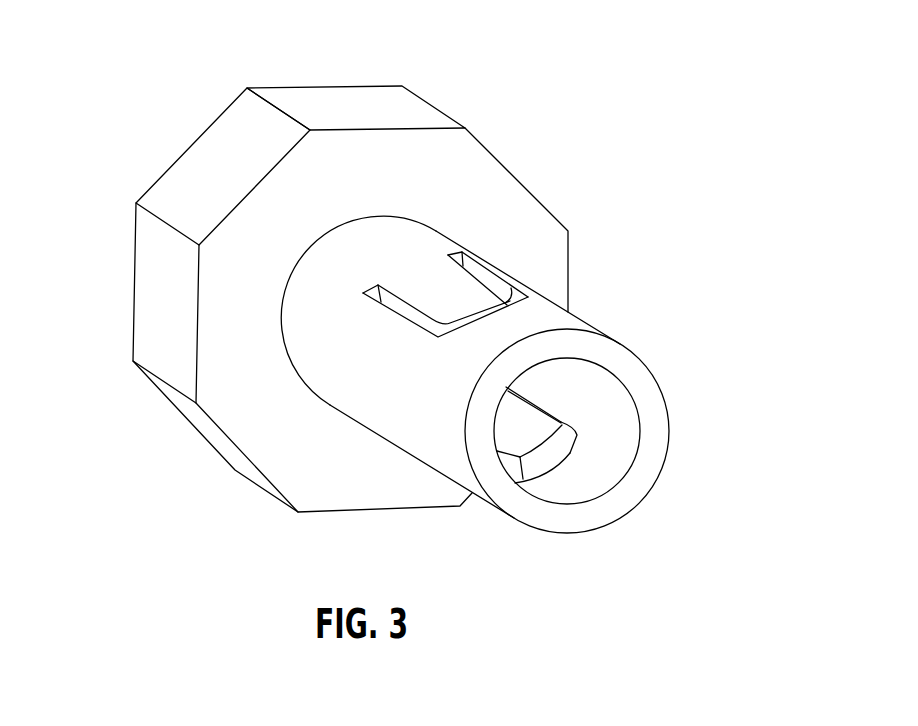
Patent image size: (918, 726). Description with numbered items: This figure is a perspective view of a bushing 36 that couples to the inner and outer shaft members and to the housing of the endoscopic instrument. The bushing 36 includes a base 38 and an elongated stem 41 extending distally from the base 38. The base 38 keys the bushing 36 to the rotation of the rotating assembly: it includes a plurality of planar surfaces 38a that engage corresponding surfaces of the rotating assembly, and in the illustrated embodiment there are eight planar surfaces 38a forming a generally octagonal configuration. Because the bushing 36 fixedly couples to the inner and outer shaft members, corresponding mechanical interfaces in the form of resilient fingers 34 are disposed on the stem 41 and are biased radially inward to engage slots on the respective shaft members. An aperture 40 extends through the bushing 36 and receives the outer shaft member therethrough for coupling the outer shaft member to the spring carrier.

The bushing 36 is at (713, 234).
The base 38 is at (487, 168).
The planar surfaces 38a is at (347, 98).
The elongated stem 41 is at (563, 327).
The aperture 40 is at (610, 413).
The resilient fingers 34 is at (463, 295).